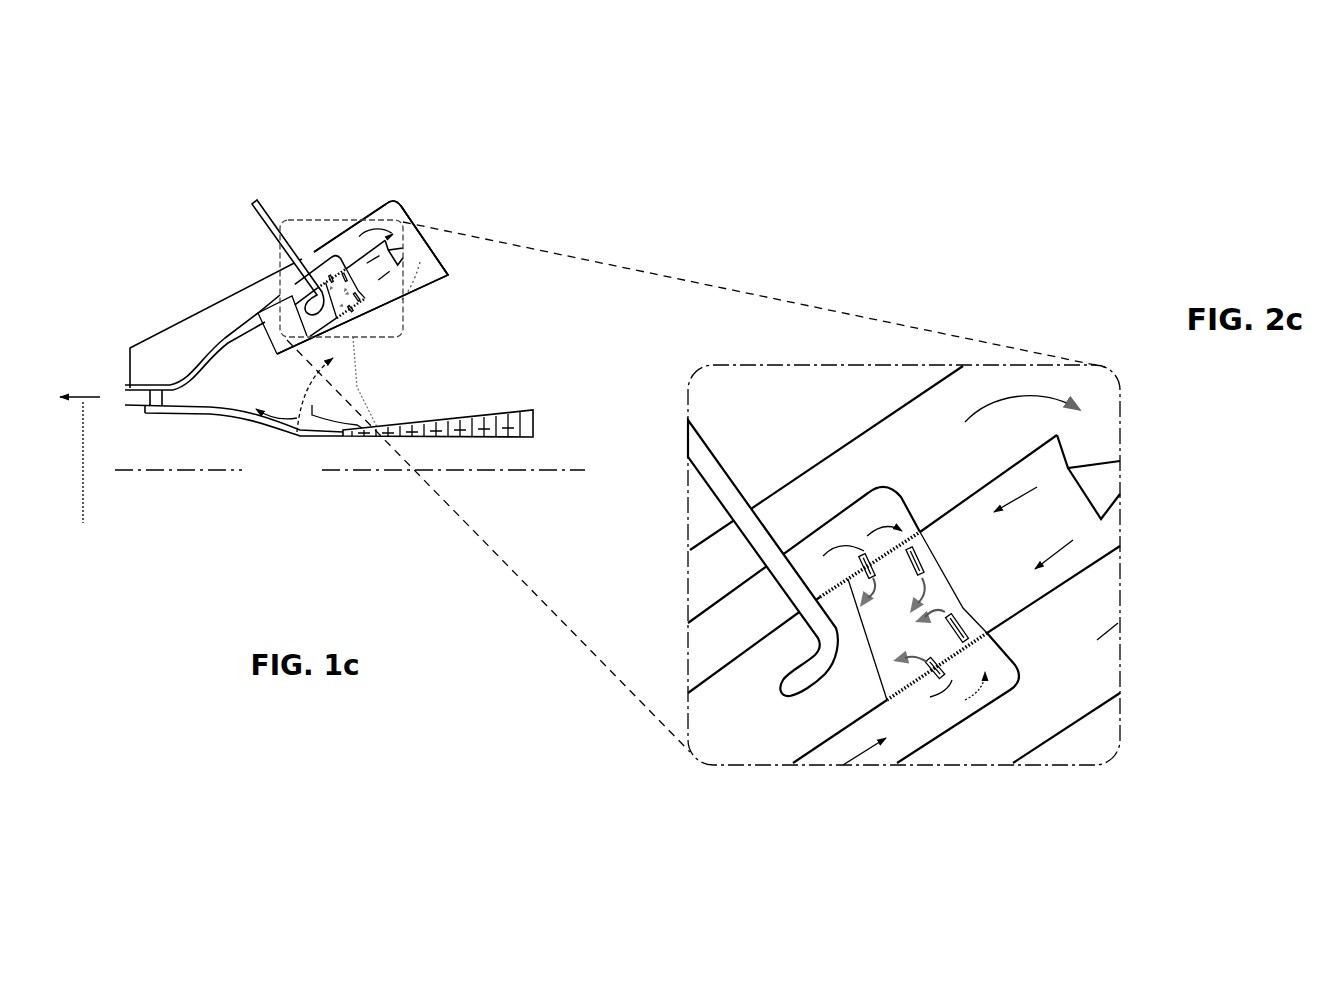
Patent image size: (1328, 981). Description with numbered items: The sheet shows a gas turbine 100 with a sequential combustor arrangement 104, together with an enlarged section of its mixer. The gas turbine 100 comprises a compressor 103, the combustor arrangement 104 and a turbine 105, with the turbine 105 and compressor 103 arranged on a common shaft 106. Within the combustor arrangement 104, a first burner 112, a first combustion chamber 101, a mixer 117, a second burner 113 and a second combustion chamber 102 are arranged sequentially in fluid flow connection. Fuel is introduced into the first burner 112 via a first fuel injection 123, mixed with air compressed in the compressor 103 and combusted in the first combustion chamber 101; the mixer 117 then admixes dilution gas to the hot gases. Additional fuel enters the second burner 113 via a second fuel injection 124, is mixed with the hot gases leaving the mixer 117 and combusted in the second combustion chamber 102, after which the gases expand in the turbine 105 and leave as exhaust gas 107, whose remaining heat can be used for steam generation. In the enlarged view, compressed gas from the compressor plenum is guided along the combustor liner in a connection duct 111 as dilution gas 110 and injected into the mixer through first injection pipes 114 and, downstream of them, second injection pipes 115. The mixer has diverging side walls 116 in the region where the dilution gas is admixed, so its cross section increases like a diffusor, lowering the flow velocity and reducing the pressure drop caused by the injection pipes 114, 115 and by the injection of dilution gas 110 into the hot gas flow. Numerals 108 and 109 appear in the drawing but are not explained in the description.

In FIG. 1c, the gas turbine 100 is at (226, 186).
In FIG. 1c, the first combustion chamber 101 is at (370, 274).
In FIG. 2c, the first combustion chamber 101 is at (1012, 545).
In FIG. 1c, the second combustion chamber 102 is at (235, 351).
In FIG. 1c, the compressor 103 is at (486, 439).
In FIG. 1c, the sequential combustor arrangement 104 is at (441, 248).
In FIG. 1c, the turbine 105 is at (153, 439).
In FIG. 1c, the shaft 106 is at (268, 482).
In FIG. 1c, the exhaust gas 107 is at (81, 478).
In FIG. 1c, the return flow passage 108 is at (334, 432).
In FIG. 2c, the inlet channel 109 is at (1016, 491).
In FIG. 2c, the dilution gas 110 is at (870, 755).
In FIG. 2c, the connection duct 111 is at (728, 627).
In FIG. 1c, the first burner 112 is at (373, 269).
In FIG. 2c, the first burner 112 is at (1108, 482).
In FIG. 1c, the second burner 113 is at (305, 323).
In FIG. 2c, the second burner 113 is at (733, 733).
In FIG. 2c, the first injection pipes 114 is at (963, 608).
In FIG. 1c, the second injection pipes 115 is at (350, 293).
In FIG. 2c, the second injection pipes 115 is at (863, 552).
In FIG. 2c, the diverging side walls 116 is at (895, 707).
In FIG. 2c, the mixer 117 is at (1000, 748).
In FIG. 1c, the first fuel injection 123 is at (438, 226).
In FIG. 1c, the second fuel injection 124 is at (268, 212).
In FIG. 2c, the second fuel injection 124 is at (720, 482).